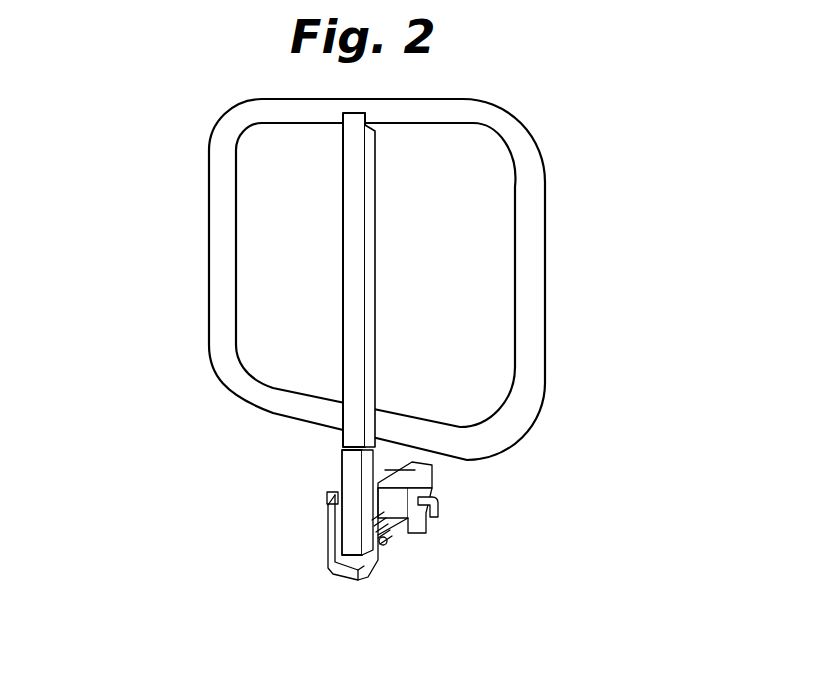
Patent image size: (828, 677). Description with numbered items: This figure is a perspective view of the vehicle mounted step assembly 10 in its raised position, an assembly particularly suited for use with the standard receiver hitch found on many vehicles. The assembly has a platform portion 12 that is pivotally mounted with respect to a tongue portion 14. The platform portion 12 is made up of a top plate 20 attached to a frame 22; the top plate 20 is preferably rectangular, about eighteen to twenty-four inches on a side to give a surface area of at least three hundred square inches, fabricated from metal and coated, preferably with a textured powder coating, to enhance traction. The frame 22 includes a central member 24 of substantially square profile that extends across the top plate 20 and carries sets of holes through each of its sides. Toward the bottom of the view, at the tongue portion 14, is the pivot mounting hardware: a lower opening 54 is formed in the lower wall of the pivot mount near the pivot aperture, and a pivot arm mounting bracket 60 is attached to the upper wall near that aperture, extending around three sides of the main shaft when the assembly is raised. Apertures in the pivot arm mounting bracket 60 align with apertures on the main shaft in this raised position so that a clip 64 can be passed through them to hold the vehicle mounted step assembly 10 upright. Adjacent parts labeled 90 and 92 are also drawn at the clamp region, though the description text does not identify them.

The vehicle mounted step assembly 10 is at (611, 144).
The platform portion 12 is at (136, 239).
The tongue portion 14 is at (461, 564).
The top plate 20 is at (267, 172).
The frame 22 is at (240, 383).
The central member 24 is at (370, 260).
The lower opening 54 is at (327, 540).
The pivot arm mounting bracket 60 is at (327, 512).
The clip 64 is at (392, 528).
The clamp block 90 is at (425, 533).
The hook 92 is at (443, 503).